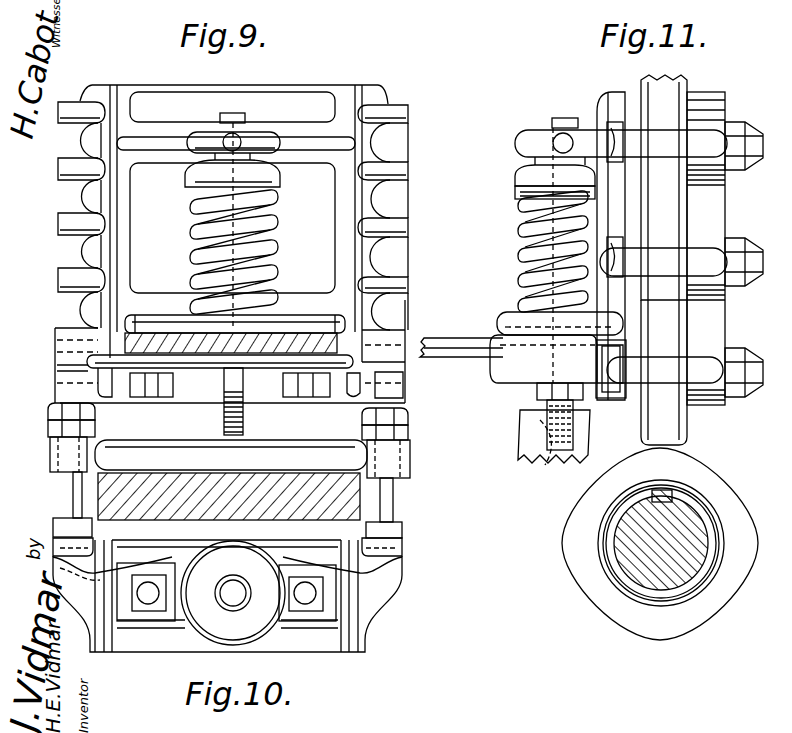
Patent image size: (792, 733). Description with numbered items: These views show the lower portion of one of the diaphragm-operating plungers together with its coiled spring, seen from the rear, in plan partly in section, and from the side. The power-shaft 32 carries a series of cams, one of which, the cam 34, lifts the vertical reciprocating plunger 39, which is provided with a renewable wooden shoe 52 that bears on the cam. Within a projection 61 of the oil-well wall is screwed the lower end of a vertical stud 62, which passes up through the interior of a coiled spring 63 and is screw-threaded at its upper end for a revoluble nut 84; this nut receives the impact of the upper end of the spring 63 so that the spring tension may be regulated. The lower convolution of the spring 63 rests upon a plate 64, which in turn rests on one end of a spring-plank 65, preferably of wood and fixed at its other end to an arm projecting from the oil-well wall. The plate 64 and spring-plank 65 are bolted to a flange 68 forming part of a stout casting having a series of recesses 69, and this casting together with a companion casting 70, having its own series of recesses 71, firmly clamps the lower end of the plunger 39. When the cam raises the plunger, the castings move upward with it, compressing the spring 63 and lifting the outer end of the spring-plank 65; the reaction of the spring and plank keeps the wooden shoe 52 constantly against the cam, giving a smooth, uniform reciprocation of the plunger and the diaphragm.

In FIG. 11, the power-shaft 32 is at (640, 568).
In FIG. 11, the cam 34 is at (690, 610).
In FIG. 10, the reciprocating plunger 39 is at (343, 497).
In FIG. 11, the reciprocating plunger 39 is at (677, 88).
In FIG. 11, the wooden shoe 52 is at (678, 422).
In FIG. 11, the projection 61 is at (538, 462).
In FIG. 11, the stud 62 is at (557, 402).
In FIG. 9, the coiled spring 63 is at (280, 232).
In FIG. 11, the coiled spring 63 is at (525, 245).
In FIG. 9, the plate 64 is at (150, 322).
In FIG. 11, the plate 64 is at (507, 328).
In FIG. 9, the spring-plank 65 is at (268, 356).
In FIG. 11, the spring-plank 65 is at (468, 348).
In FIG. 9, the flange 68 is at (200, 362).
In FIG. 11, the flange 68 is at (525, 365).
In FIG. 9, the recesses 69 is at (72, 195).
In FIG. 11, the recesses 69 is at (622, 125).
In FIG. 11, the companion casting 70 is at (710, 218).
In FIG. 11, the recesses 71 is at (713, 160).
In FIG. 9, the revoluble nut 84 is at (260, 140).